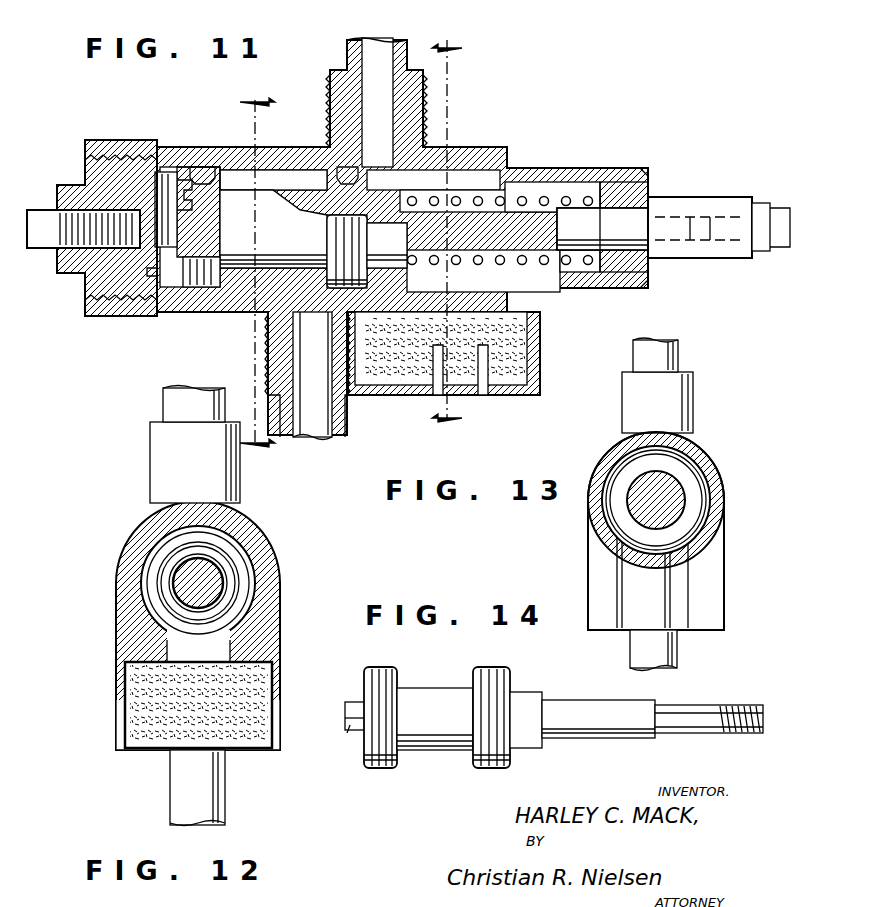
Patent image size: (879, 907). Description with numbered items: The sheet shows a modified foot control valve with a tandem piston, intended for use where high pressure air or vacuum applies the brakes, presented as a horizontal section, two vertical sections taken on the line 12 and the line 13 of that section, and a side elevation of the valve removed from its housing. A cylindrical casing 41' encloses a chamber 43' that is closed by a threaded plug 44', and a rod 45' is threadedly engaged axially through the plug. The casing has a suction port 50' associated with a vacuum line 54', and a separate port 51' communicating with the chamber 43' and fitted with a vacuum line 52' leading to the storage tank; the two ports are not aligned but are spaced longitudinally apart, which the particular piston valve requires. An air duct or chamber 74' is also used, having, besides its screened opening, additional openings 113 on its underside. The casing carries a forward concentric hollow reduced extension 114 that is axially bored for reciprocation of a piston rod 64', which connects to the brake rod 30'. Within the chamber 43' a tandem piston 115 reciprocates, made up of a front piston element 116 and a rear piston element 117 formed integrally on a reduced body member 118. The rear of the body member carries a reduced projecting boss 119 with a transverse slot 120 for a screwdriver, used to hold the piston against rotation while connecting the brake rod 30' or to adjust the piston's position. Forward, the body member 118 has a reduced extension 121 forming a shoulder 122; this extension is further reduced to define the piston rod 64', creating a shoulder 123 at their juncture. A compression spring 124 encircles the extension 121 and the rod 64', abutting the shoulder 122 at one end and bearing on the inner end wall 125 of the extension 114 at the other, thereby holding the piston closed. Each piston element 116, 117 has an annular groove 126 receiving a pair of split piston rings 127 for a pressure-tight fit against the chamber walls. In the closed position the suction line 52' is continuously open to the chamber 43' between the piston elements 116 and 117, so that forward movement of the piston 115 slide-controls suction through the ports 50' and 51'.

In FIG. 11, the brake rod 30' is at (771, 201).
In FIG. 11, the cylindrical casing 41' is at (402, 237).
In FIG. 12, the cylindrical casing 41' is at (221, 625).
In FIG. 13, the cylindrical casing 41' is at (668, 529).
In FIG. 11, the chamber 43' is at (273, 145).
In FIG. 12, the chamber 43' is at (241, 583).
In FIG. 13, the chamber 43' is at (688, 516).
In FIG. 11, the threaded plug 44' is at (91, 221).
In FIG. 11, the rod 45' is at (76, 255).
In FIG. 11, the suction port 50' is at (408, 111).
In FIG. 11, the port 51' is at (282, 351).
In FIG. 11, the vacuum line 52' is at (331, 422).
In FIG. 12, the vacuum line 52' is at (221, 788).
In FIG. 13, the vacuum line 52' is at (653, 661).
In FIG. 11, the vacuum line 54' is at (353, 41).
In FIG. 12, the vacuum line 54' is at (174, 440).
In FIG. 13, the vacuum line 54' is at (681, 385).
In FIG. 11, the piston rod 64' is at (700, 205).
In FIG. 14, the piston rod 64' is at (709, 738).
In FIG. 11, the air duct or chamber 74' is at (444, 360).
In FIG. 12, the air duct or chamber 74' is at (167, 705).
In FIG. 11, the openings 113 is at (480, 385).
In FIG. 12, the openings 113 is at (163, 745).
In FIG. 11, the hollow reduced extension 114 is at (600, 186).
In FIG. 11, the tandem piston 115 is at (299, 200).
In FIG. 12, the tandem piston 115 is at (96, 590).
In FIG. 14, the tandem piston 115 is at (444, 720).
In FIG. 11, the front piston element 116 is at (383, 286).
In FIG. 12, the front piston element 116 is at (240, 565).
In FIG. 13, the front piston element 116 is at (717, 530).
In FIG. 14, the front piston element 116 is at (514, 670).
In FIG. 11, the rear piston element 117 is at (258, 286).
In FIG. 14, the rear piston element 117 is at (370, 672).
In FIG. 11, the reduced body member 118 is at (266, 240).
In FIG. 13, the reduced body member 118 is at (685, 493).
In FIG. 14, the reduced body member 118 is at (430, 708).
In FIG. 11, the projecting boss 119 is at (143, 300).
In FIG. 14, the projecting boss 119 is at (357, 730).
In FIG. 11, the slot 120 is at (164, 172).
In FIG. 14, the slot 120 is at (345, 715).
In FIG. 11, the forward reduced extension 121 is at (533, 212).
In FIG. 12, the forward reduced extension 121 is at (182, 572).
In FIG. 14, the forward reduced extension 121 is at (595, 710).
In FIG. 11, the shoulder 122 is at (420, 270).
In FIG. 14, the shoulder 122 is at (542, 744).
In FIG. 11, the shoulder 123 is at (560, 288).
In FIG. 14, the shoulder 123 is at (662, 705).
In FIG. 11, the compression spring 124 is at (566, 198).
In FIG. 12, the compression spring 124 is at (222, 570).
In FIG. 11, the inner end wall 125 is at (628, 288).
In FIG. 11, the annular groove 126 is at (183, 165).
In FIG. 11, the split piston rings 127 is at (345, 235).
In FIG. 13, the split piston rings 127 is at (605, 460).
In FIG. 14, the split piston rings 127 is at (380, 768).
In FIG. 11, the section line 12- 12 is at (448, 228).
In FIG. 11, the section line 13- 13 is at (255, 273).